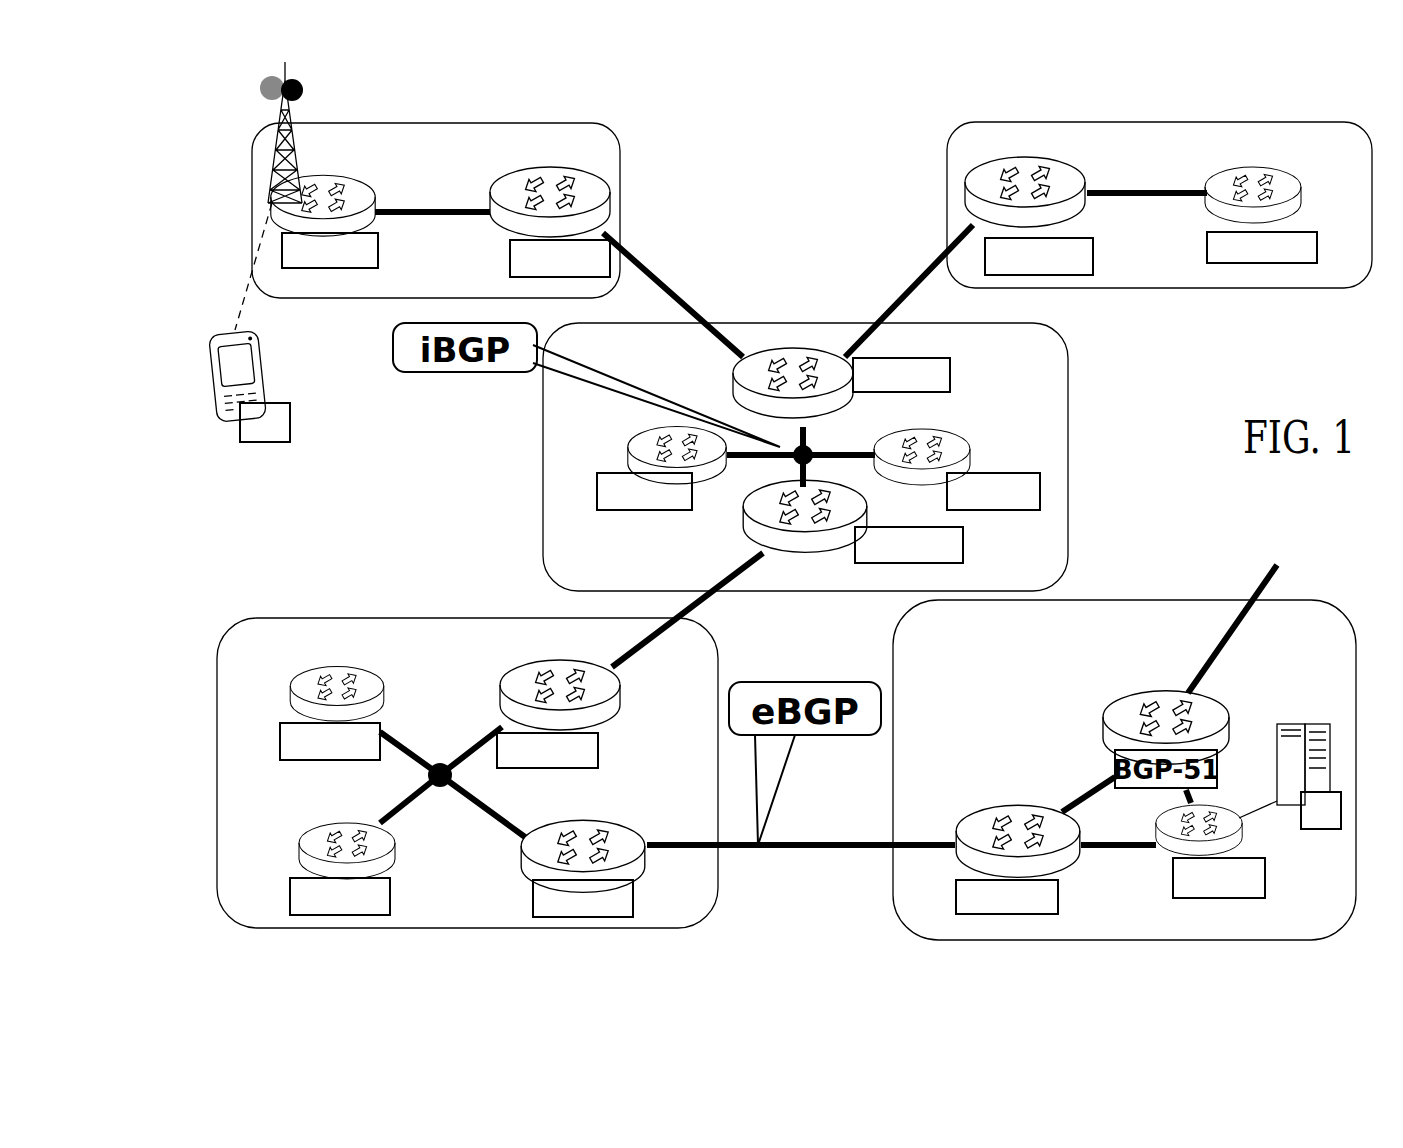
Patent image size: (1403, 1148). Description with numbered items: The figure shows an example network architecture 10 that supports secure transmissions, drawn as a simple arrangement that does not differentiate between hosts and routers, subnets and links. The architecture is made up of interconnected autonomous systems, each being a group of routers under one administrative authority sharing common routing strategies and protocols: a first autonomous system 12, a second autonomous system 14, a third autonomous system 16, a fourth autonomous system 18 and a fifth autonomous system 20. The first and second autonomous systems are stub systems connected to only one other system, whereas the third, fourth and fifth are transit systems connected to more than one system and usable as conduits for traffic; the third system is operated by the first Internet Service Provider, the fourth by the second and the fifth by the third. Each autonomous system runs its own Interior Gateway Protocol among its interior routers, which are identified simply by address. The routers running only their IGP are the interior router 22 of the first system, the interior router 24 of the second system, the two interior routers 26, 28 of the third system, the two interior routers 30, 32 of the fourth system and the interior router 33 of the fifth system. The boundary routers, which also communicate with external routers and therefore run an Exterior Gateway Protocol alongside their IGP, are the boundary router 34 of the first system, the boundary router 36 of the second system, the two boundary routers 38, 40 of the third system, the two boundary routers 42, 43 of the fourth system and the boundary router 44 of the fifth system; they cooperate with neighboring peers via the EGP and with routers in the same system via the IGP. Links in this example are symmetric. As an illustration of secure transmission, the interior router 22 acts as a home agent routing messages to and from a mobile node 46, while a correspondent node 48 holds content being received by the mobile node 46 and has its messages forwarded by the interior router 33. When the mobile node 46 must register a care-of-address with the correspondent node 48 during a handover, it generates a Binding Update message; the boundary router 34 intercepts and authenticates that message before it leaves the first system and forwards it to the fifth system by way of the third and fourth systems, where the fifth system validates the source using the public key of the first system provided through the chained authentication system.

The network architecture 10 is at (755, 227).
The autonomous system AS1 12 is at (500, 143).
The autonomous system AS2 14 is at (1193, 140).
The autonomous system AS3 16 is at (1055, 380).
The autonomous system AS4 18 is at (448, 623).
The autonomous system AS5 20 is at (928, 728).
The router IGP-11 22 is at (325, 178).
The router IGP-21 24 is at (1273, 168).
The router IGP-31 26 is at (630, 463).
The router IGP-32 28 is at (963, 447).
The router IGP-41 30 is at (293, 680).
The router IGP-42 32 is at (300, 857).
The router IGP-51 33 is at (1232, 832).
The boundary router BGP-11 34 is at (603, 185).
The boundary router BGP-21 36 is at (1020, 178).
The boundary router BGP-31 38 is at (797, 353).
The boundary router BGP-32 40 is at (785, 540).
The boundary router BGP-41 42 is at (548, 662).
The boundary router BGP-42 43 is at (637, 867).
The boundary router BGP-51 44 is at (961, 849).
The mobile node 46 is at (255, 365).
The correspondent node 48 is at (1325, 726).